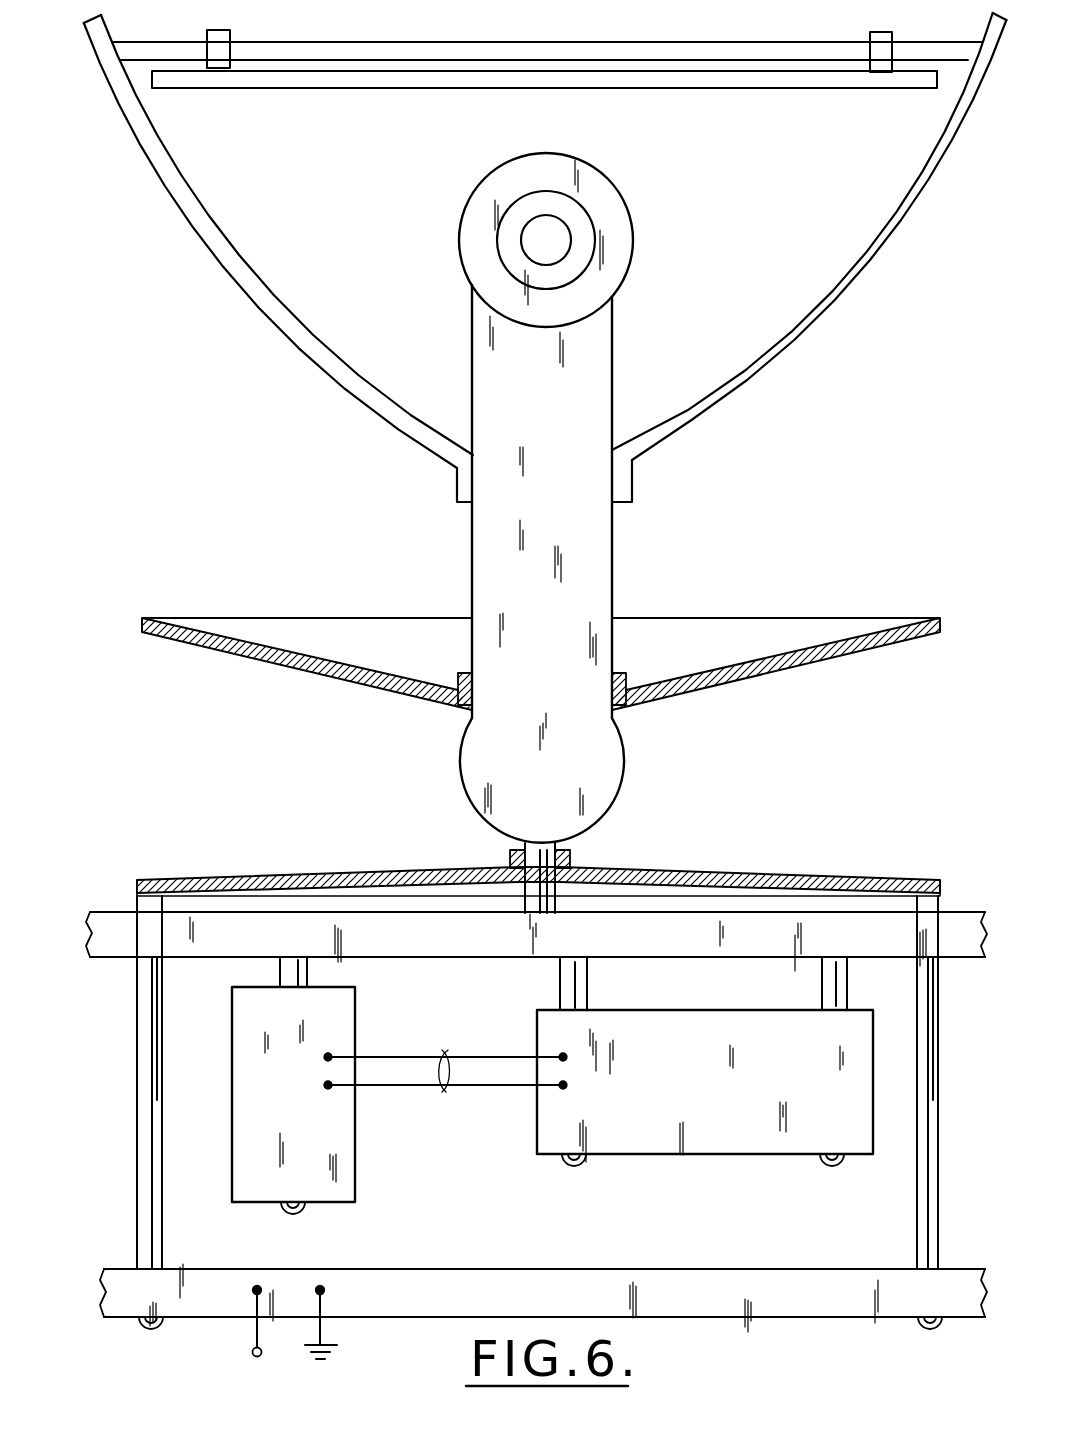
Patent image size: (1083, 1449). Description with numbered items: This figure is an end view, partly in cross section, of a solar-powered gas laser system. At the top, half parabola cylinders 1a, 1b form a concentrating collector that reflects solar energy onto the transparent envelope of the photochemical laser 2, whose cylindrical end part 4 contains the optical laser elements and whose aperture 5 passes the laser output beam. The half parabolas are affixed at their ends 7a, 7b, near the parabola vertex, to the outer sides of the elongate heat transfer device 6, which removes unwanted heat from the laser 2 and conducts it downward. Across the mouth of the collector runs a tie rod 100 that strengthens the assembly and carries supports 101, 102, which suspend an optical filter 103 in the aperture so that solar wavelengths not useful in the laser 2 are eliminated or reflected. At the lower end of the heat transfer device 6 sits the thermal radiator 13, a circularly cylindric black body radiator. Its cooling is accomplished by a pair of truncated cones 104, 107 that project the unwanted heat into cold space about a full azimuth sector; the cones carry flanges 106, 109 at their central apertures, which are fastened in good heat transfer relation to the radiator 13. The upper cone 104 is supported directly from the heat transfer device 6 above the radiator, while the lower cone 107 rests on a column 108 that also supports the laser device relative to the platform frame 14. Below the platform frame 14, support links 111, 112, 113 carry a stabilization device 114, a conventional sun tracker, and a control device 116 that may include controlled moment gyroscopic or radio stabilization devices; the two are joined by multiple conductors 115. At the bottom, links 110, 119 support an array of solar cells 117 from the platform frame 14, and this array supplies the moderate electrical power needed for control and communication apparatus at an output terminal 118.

The half parabola cylinder 1a is at (237, 270).
The half parabola cylinder 1b is at (843, 288).
The photochemical laser 2 is at (636, 228).
The cylindrical end part 4 is at (590, 208).
The aperture 5 is at (500, 238).
The heat transfer device 6 is at (622, 557).
The end of half parabola 7a is at (632, 486).
The end of half parabola 7b is at (457, 490).
The thermal radiator 13 is at (627, 762).
The platform frame 14 is at (112, 912).
The tie rod 100 is at (520, 42).
The support 101 is at (230, 31).
The support 102 is at (870, 33).
The optical filter 103 is at (760, 92).
The truncated cone 104 is at (326, 617).
The flange 106 is at (460, 673).
The truncated cone 107 is at (378, 876).
The column 108 is at (525, 906).
The flange 109 is at (570, 860).
The link 110 is at (137, 1088).
The support link 111 is at (307, 978).
The support link 112 is at (587, 984).
The support link 113 is at (822, 988).
The stabilization device 114 is at (355, 1026).
The multiple conductors 115 is at (445, 1092).
The control device 116 is at (537, 1012).
The array of solar cells 117 is at (546, 1269).
The terminal 118 is at (250, 1352).
The link 119 is at (917, 1222).